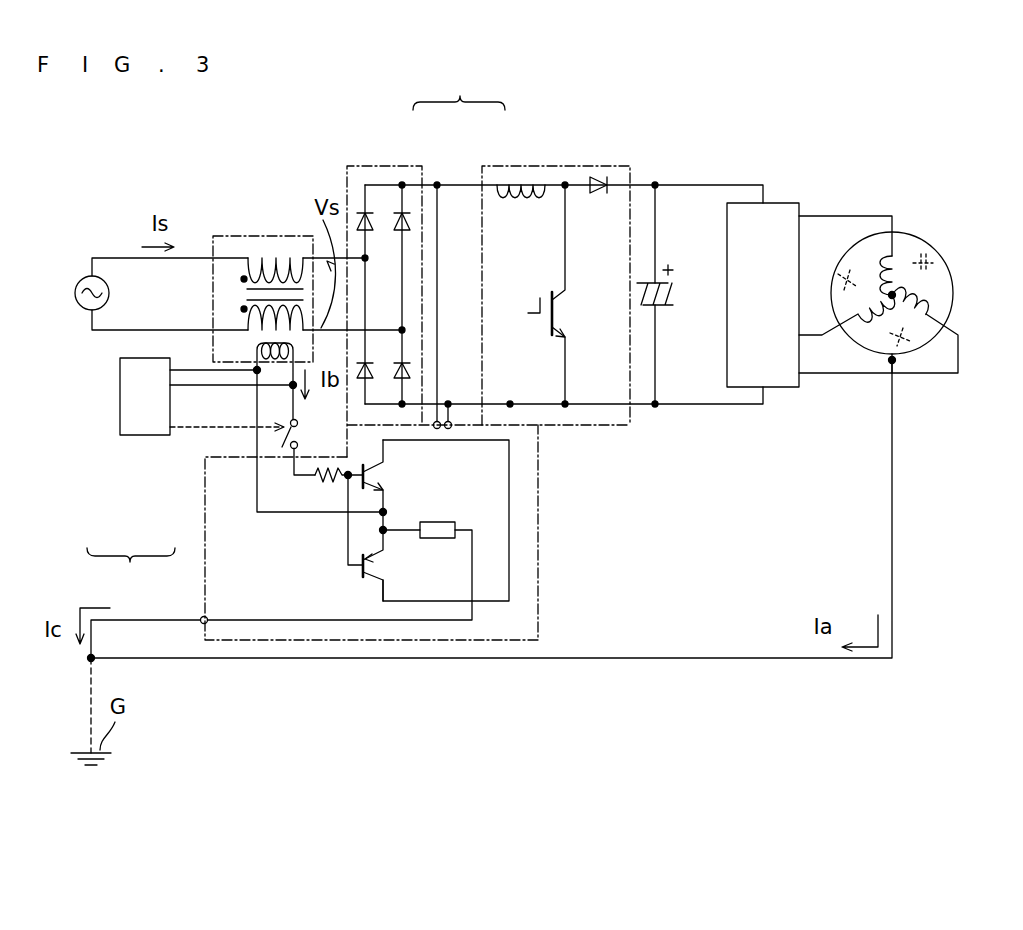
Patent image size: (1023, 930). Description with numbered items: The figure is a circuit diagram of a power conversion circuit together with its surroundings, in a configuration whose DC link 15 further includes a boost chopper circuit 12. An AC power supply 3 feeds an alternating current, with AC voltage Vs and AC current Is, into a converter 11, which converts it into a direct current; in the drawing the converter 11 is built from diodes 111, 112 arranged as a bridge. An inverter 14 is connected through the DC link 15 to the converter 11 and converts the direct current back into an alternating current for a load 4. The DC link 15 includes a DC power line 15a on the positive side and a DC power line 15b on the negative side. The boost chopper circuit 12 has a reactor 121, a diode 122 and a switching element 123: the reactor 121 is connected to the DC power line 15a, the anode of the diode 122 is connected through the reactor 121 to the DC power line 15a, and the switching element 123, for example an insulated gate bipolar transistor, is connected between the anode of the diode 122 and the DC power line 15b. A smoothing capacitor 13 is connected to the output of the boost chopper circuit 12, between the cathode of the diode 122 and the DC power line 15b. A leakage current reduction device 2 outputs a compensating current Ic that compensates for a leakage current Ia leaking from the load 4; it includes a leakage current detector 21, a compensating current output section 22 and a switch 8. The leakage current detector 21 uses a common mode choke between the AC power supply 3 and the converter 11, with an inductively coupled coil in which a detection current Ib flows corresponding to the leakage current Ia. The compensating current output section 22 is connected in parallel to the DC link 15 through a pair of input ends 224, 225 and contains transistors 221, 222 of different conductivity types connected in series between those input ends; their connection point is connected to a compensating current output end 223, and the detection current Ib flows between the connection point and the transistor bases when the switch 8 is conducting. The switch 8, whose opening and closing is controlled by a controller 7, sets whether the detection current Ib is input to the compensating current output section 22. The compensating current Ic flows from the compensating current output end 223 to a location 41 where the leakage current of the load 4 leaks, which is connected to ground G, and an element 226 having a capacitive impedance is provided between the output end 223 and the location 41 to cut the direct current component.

The leakage current reduction device 2 is at (131, 571).
The AC power supply 3 is at (78, 285).
The load 4 is at (954, 266).
The controller 7 is at (120, 403).
The switch 8 is at (302, 433).
The converter 11 is at (353, 165).
The boost chopper circuit 12 is at (548, 165).
The smoothing capacitor 13 is at (662, 310).
The inverter 14 is at (787, 388).
The DC link 15 is at (459, 91).
The DC power line 15a is at (437, 183).
The DC power line 15b is at (462, 403).
The leakage current detector 21 is at (223, 362).
The compensating current output section 22 is at (205, 532).
The location 41 is at (888, 360).
The upper diodes 111 is at (402, 182).
The lower diodes 112 is at (400, 378).
The reactor 121 is at (520, 202).
The diode 122 is at (597, 196).
The switching element 123 is at (572, 325).
The transistor 221 is at (386, 476).
The transistor 222 is at (388, 568).
The compensating current output end 223 is at (207, 617).
The input end 224 is at (434, 429).
The input end 225 is at (451, 429).
The element having a capacitive impedance 226 is at (452, 522).